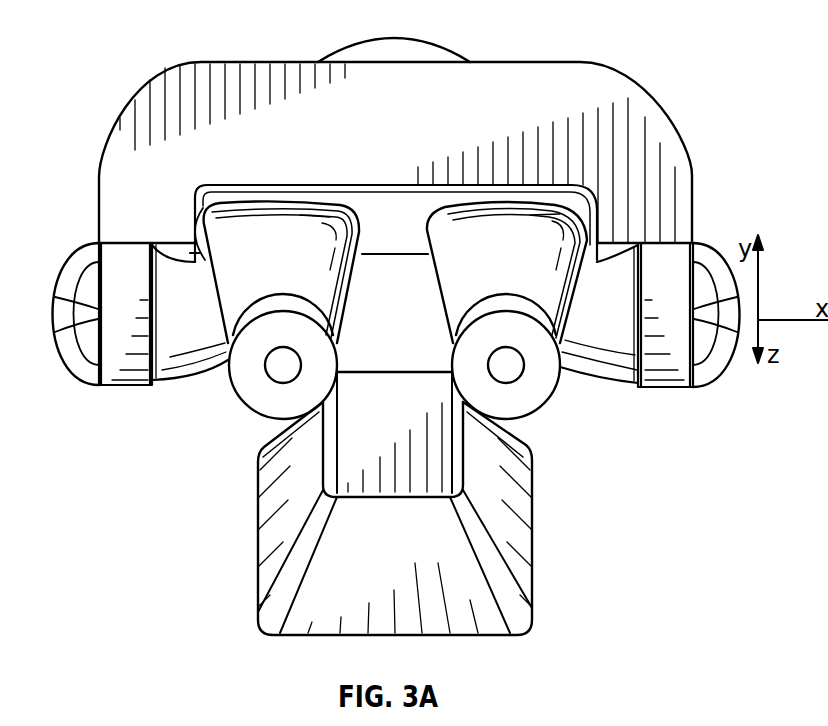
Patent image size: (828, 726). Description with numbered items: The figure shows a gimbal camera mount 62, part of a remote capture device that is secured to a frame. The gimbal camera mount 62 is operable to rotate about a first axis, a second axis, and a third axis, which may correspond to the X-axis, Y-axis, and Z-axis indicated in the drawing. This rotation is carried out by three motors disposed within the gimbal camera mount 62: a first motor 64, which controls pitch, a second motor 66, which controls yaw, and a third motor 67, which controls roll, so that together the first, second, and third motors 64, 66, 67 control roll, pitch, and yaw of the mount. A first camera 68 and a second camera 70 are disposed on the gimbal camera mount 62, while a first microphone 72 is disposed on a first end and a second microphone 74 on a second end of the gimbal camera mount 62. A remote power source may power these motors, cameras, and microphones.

The gimbal camera mount 62 is at (113, 125).
The first motor 64 is at (127, 377).
The second motor 66 is at (457, 465).
The third motor 67 is at (360, 45).
The first camera 68 is at (227, 372).
The second camera 70 is at (541, 375).
The first microphone 72 is at (70, 272).
The second microphone 74 is at (717, 350).